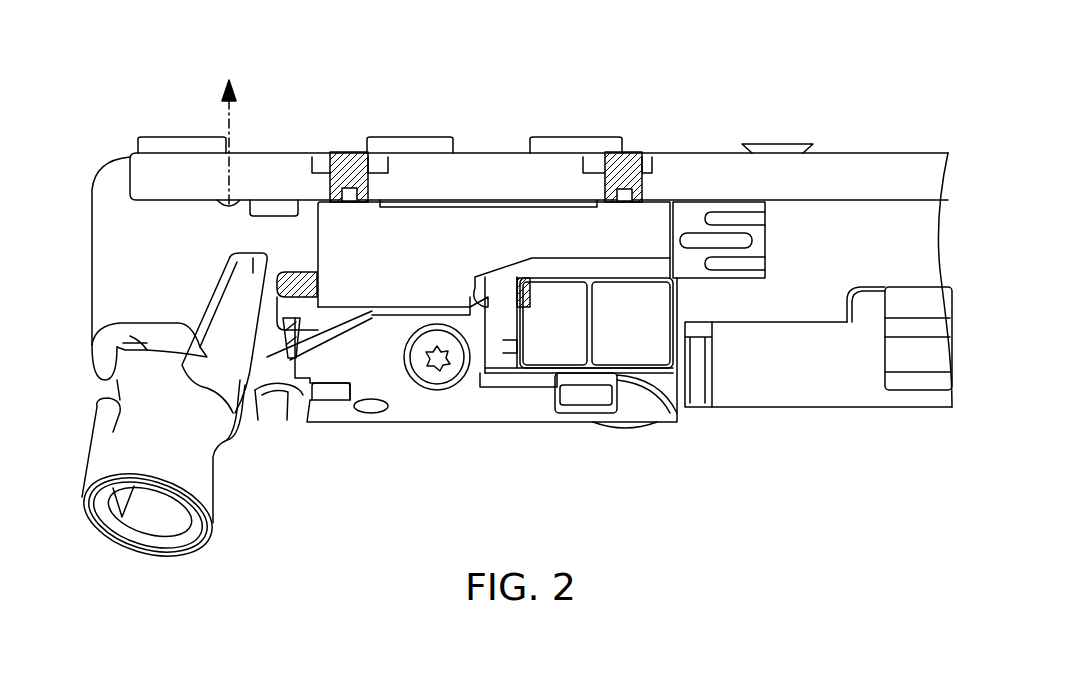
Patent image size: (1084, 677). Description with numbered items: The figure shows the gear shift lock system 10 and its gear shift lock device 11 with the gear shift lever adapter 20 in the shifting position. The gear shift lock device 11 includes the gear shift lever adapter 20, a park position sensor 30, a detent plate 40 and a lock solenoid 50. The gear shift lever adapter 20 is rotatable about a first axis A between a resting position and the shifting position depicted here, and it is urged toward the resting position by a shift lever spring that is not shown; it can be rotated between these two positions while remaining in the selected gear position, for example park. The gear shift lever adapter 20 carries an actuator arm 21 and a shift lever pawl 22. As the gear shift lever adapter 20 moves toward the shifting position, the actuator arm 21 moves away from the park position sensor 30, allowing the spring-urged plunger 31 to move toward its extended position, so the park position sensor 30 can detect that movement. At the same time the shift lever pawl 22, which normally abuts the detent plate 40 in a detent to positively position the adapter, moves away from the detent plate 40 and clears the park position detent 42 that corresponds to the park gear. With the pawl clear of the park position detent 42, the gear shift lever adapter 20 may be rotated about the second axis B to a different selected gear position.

The gear shift lock system 10 is at (813, 100).
The gear shift lock device 11 is at (99, 155).
The gear shift lever adapter 20 is at (138, 450).
The actuator arm 21 is at (247, 273).
The shift lever pawl 22 is at (287, 393).
The park position sensor 30 is at (320, 284).
The plunger 31 is at (292, 272).
The detent plate 40 is at (425, 422).
The park position detent 42 is at (333, 400).
The lock solenoid 50 is at (742, 408).
The first axis A is at (227, 125).
The second axis B is at (112, 250).